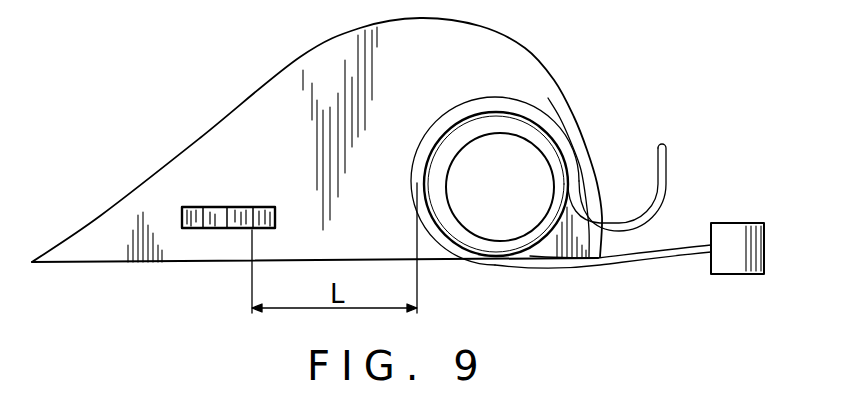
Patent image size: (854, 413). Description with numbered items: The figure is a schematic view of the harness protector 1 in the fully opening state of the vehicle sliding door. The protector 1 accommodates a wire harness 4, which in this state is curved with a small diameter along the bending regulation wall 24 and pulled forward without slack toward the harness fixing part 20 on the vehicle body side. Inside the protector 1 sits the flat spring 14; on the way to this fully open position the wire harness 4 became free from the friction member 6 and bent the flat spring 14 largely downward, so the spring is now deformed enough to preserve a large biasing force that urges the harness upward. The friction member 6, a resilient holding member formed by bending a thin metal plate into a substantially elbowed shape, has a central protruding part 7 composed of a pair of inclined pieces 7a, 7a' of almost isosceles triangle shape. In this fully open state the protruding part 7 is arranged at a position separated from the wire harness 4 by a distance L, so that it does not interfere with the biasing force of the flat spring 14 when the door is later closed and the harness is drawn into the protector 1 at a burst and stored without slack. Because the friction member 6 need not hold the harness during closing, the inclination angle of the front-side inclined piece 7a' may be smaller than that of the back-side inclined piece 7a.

The harness protector 1 is at (566, 84).
The wire harness 4 is at (422, 147).
The flat spring 14 is at (466, 125).
The bending regulation wall 24 is at (480, 240).
The friction member 6 is at (247, 205).
The protruding part 7 is at (230, 207).
The inclined piece 7a is at (184, 266).
The inclined piece 7a' is at (223, 291).
The harness fixing part 20 is at (732, 230).